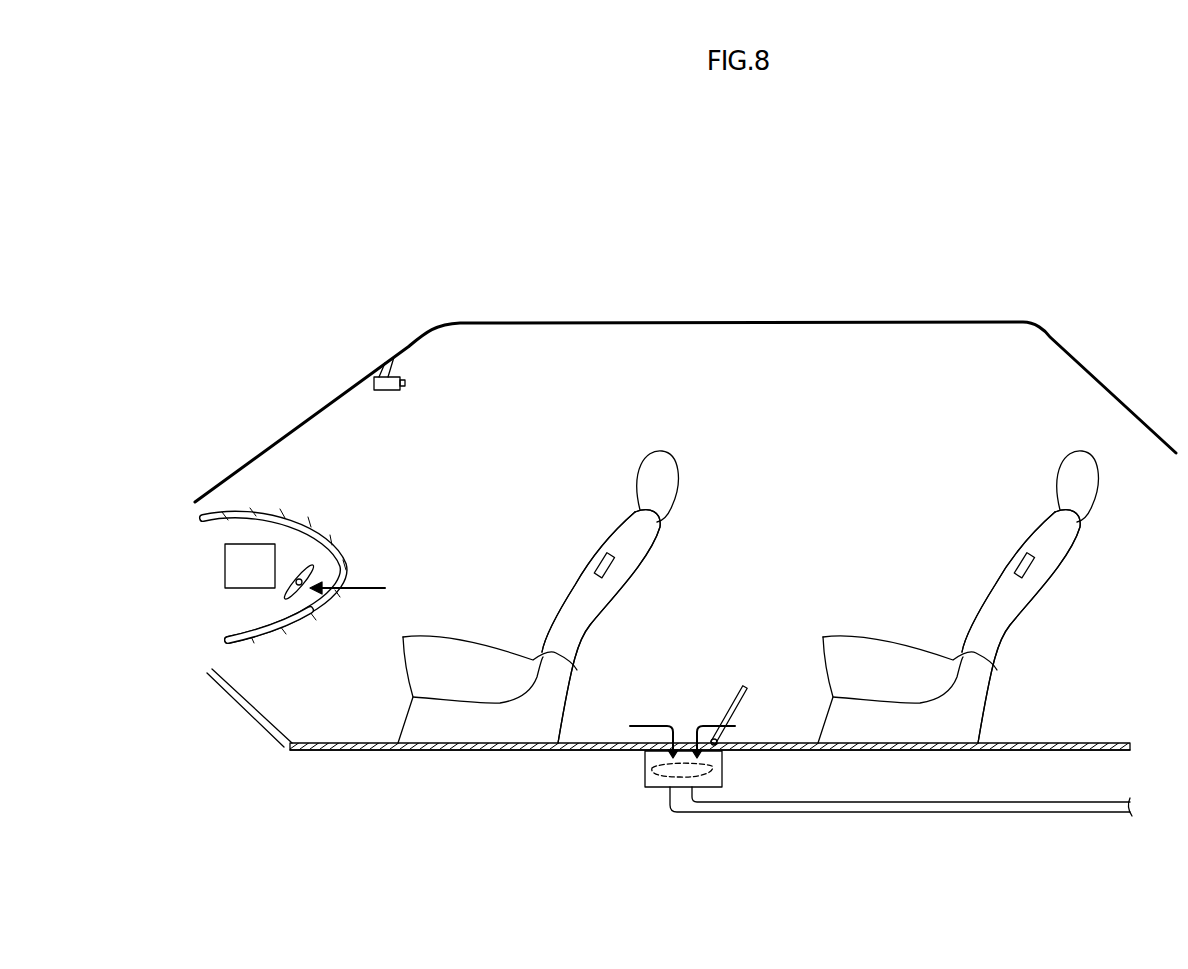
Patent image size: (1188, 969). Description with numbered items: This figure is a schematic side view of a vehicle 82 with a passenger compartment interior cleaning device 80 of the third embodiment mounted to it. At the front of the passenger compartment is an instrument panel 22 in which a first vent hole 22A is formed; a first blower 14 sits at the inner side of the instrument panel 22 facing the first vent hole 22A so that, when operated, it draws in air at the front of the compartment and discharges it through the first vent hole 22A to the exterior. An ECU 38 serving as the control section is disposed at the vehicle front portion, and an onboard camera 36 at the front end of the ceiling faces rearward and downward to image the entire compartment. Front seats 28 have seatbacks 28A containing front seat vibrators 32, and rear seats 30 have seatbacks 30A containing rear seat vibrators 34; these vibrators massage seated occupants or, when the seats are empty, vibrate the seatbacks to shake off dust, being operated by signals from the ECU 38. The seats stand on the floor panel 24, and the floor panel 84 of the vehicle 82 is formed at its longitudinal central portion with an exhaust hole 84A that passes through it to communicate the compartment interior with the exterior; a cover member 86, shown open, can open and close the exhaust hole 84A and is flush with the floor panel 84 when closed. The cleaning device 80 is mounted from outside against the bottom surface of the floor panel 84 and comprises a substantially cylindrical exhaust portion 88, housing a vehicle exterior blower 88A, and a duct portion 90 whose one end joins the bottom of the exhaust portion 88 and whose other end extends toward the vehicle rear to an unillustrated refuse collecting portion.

The vehicle 82 is at (1025, 262).
The onboard camera 36 is at (398, 376).
The ECU 38 is at (249, 543).
The first blower 14 is at (303, 568).
The instrument panel 22 is at (334, 538).
The first vent hole 22A is at (322, 606).
The front seats 28 is at (626, 508).
The seatbacks 28A is at (585, 570).
The front seat vibrators 32 is at (616, 572).
The rear seats 30 is at (1045, 510).
The seatbacks 30A is at (1005, 570).
The rear seat vibrators 34 is at (1036, 572).
The floor panel 24 is at (773, 741).
The floor panel 84 is at (1108, 741).
The exhaust hole 84A is at (665, 742).
The cover member 86 is at (742, 686).
The exhaust portion 88 is at (641, 771).
The vehicle exterior blower 88A is at (722, 770).
The passenger compartment interior cleaning device 80 is at (626, 824).
The duct portion 90 is at (903, 813).